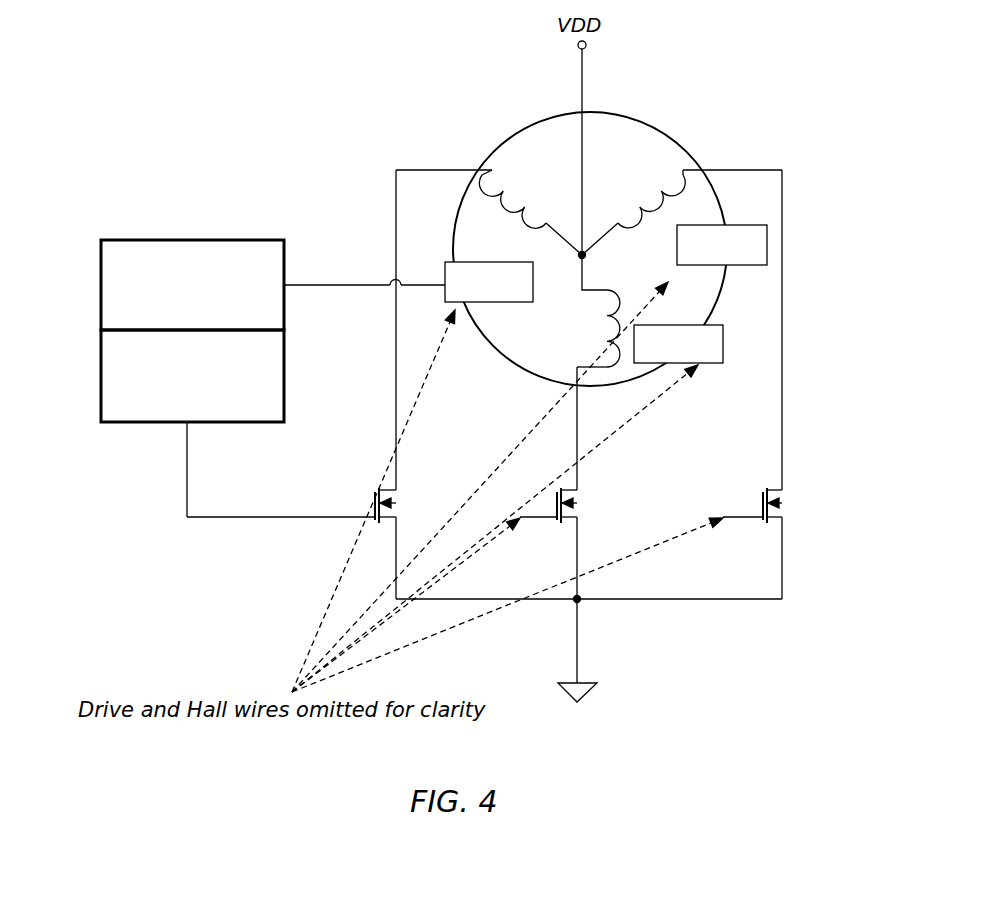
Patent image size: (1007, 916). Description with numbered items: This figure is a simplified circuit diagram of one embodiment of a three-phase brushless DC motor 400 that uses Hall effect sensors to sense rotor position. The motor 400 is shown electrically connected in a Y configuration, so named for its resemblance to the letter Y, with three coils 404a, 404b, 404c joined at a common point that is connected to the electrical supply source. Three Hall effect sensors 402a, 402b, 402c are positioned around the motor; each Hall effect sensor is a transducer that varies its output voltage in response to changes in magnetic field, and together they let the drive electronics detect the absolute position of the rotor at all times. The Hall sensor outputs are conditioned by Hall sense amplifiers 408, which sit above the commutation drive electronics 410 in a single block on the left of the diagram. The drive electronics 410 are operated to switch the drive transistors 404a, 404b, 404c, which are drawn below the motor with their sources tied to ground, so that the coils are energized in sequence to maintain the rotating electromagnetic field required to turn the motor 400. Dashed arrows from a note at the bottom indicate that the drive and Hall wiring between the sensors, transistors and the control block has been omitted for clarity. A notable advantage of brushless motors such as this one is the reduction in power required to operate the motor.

The brushless DC motor 400 is at (722, 86).
The Hall effect sensor 402a is at (740, 265).
The Hall effect sensor 402b is at (710, 363).
The Hall effect sensor 402c is at (446, 262).
The drive transistor / coil 404a is at (632, 216).
The drive transistor / coil 404b is at (604, 332).
The drive transistor / coil 404c is at (540, 215).
The Hall sense amplifiers 408 is at (160, 238).
The drive electronics 410 is at (148, 424).